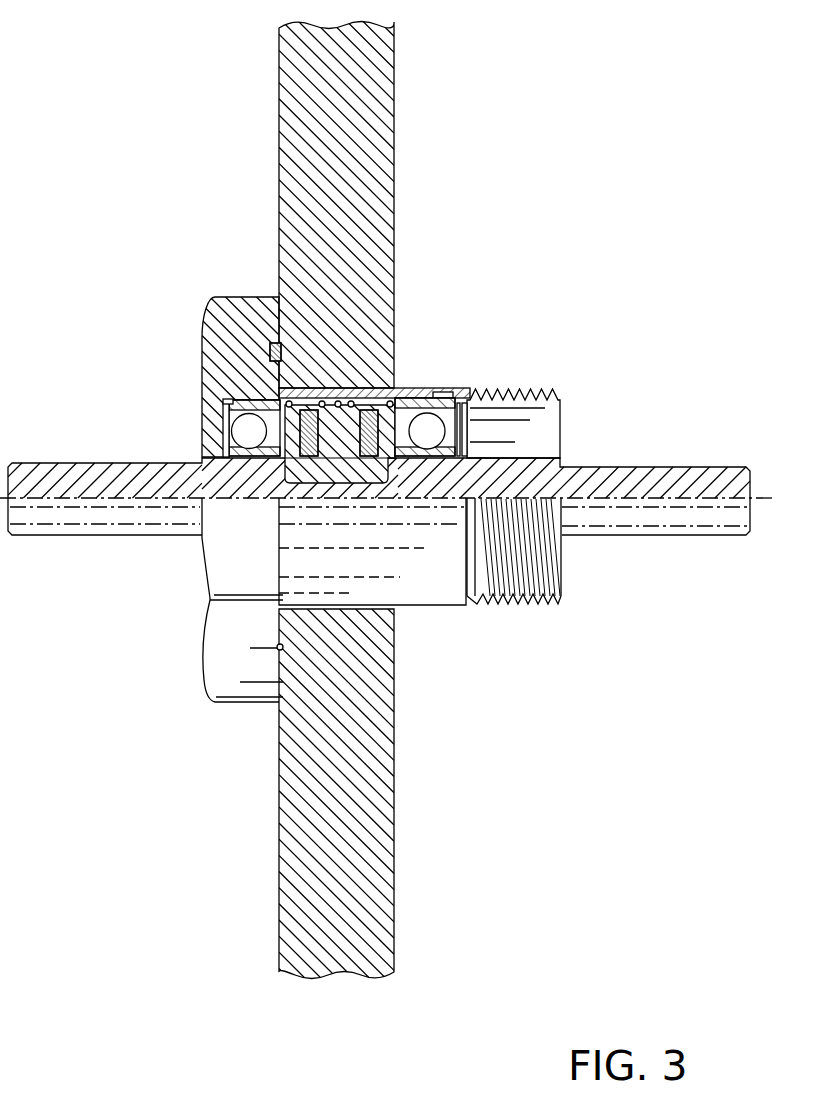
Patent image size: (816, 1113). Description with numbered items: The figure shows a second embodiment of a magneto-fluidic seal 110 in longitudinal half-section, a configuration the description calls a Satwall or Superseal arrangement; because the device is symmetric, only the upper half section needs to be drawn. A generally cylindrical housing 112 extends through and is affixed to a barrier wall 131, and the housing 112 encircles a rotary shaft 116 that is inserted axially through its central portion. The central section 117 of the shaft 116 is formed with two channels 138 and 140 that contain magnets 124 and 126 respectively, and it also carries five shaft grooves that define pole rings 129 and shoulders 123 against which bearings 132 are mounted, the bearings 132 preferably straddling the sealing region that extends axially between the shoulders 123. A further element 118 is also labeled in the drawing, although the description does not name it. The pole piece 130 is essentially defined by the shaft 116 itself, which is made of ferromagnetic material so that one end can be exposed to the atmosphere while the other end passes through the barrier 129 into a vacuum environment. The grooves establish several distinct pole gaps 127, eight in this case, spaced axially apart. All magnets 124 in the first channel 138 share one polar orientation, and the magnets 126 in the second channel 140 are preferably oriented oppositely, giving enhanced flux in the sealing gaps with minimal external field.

The magneto-fluidic seal 110 is at (548, 210).
The housing 112 is at (253, 300).
The rotary shaft 116 is at (622, 467).
The central section 117 is at (372, 458).
The bearing 118 is at (318, 458).
The shoulders 123 is at (232, 430).
The magnet 124 is at (308, 455).
The magnet 126 is at (418, 392).
The pole gaps 127 is at (312, 410).
The pole rings 129 is at (393, 458).
The pole piece 130 is at (277, 468).
The barrier wall 131 is at (395, 932).
The bearings 132 is at (201, 450).
The channel 138 is at (302, 408).
The channel 140 is at (340, 425).